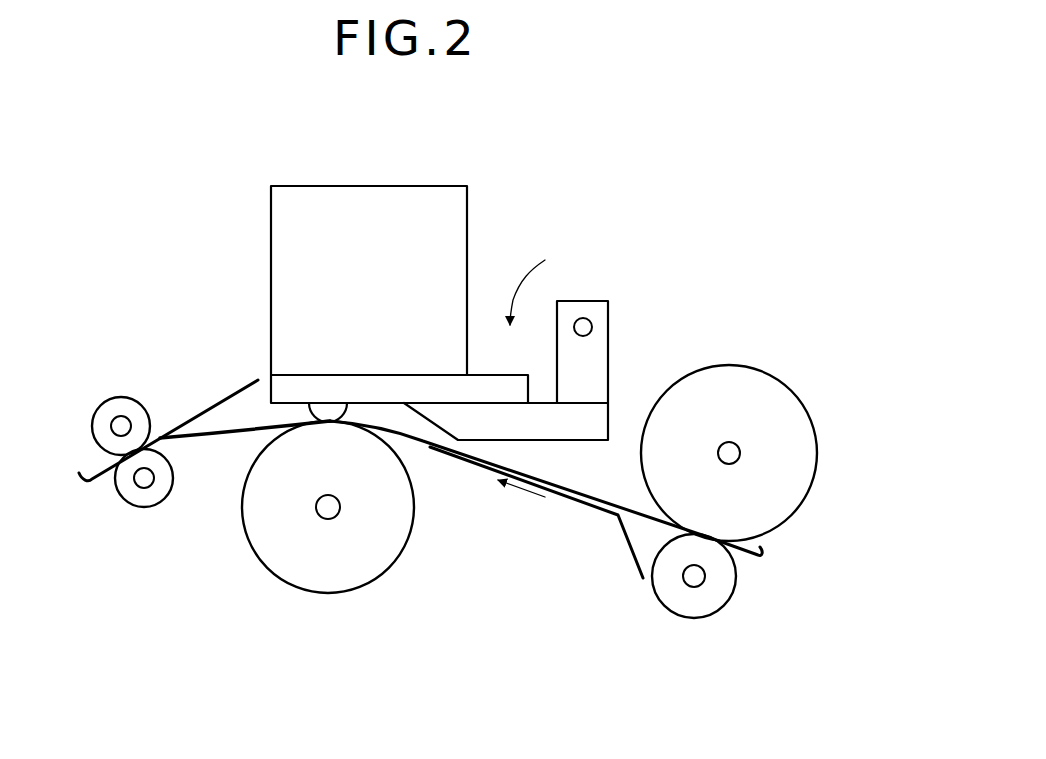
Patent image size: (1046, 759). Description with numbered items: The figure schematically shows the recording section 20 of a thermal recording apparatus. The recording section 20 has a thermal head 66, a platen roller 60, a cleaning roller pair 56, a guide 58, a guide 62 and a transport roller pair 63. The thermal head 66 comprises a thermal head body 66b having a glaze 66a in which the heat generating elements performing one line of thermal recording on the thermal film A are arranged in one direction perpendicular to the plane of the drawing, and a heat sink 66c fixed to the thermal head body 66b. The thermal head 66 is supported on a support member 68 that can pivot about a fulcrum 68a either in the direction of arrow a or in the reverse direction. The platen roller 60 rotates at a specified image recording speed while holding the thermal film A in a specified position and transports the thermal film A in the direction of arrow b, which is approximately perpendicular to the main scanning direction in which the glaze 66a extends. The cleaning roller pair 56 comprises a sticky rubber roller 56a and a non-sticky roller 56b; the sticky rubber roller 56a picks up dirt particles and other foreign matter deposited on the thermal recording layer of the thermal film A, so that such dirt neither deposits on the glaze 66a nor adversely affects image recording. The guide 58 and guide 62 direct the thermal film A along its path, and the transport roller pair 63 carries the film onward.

The recording section 20 is at (262, 617).
The cleaning roller pair 56 is at (688, 628).
The sticky rubber roller 56a is at (773, 402).
The non-sticky roller 56b is at (717, 602).
The guide 58 is at (625, 532).
The platen roller 60 is at (328, 575).
The guide 62 is at (217, 427).
The transport roller pair 63 is at (120, 400).
The thermal head 66 is at (512, 160).
The glaze 66a is at (330, 418).
The thermal head body 66b is at (487, 383).
The heat sink 66c is at (362, 200).
The support member 68 is at (603, 355).
The fulcrum 68a is at (592, 322).
The thermal film A is at (197, 433).
The arrow a is at (523, 281).
The arrow b is at (513, 493).